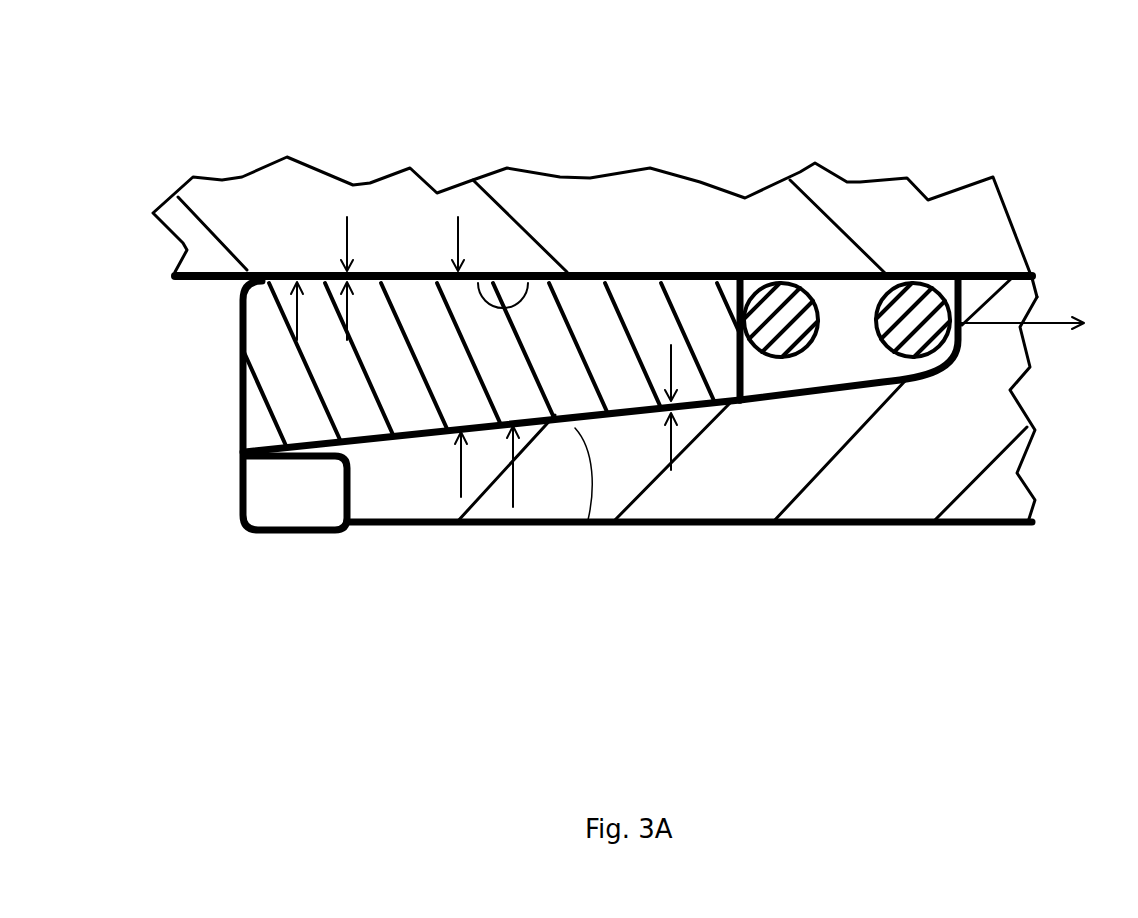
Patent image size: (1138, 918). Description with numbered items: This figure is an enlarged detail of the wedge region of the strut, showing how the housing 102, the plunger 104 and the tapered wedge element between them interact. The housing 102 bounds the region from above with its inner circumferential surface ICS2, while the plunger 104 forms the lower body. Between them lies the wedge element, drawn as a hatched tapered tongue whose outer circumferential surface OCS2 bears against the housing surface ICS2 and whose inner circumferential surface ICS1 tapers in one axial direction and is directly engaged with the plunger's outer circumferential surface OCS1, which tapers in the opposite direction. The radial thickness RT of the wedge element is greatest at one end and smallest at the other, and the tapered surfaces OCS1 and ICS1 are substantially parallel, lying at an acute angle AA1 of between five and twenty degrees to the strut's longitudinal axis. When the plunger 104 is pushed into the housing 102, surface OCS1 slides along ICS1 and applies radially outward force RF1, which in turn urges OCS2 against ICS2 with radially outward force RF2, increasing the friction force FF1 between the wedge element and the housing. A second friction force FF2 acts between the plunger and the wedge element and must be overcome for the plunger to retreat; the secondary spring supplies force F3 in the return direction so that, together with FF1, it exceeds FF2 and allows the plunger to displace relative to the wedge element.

The housing 102 is at (260, 165).
The plunger 104 is at (977, 293).
The inner circumferential surface ICS1 is at (412, 430).
The inner circumferential surface ICS2 is at (208, 270).
The outer circumferential surface OCS1 is at (883, 382).
The outer circumferential surface OCS2 is at (528, 275).
The friction force FF1 is at (347, 240).
The friction force FF2 is at (673, 437).
The radially outward force RF1 is at (512, 487).
The radially outward force RF2 is at (297, 313).
The radial thickness RT is at (458, 466).
The acute angle AA1 is at (597, 473).
The force F3 is at (1047, 327).